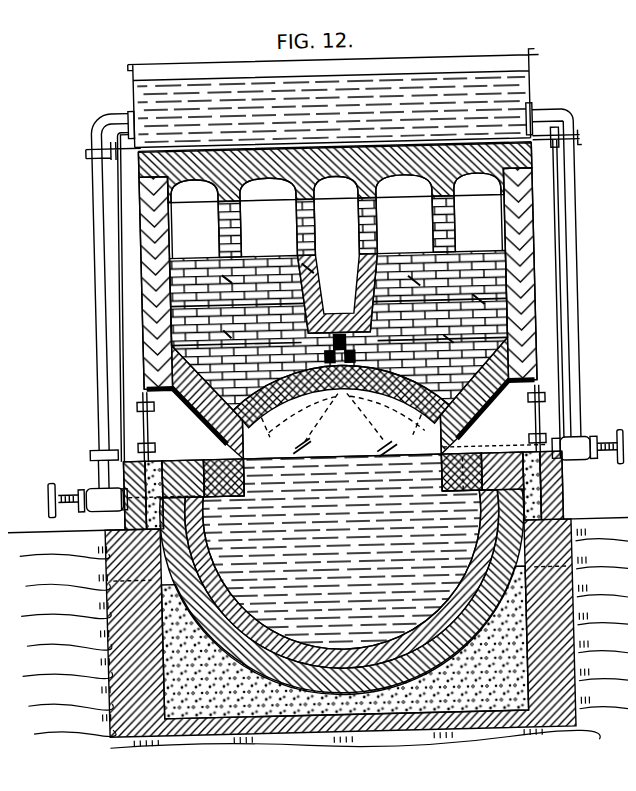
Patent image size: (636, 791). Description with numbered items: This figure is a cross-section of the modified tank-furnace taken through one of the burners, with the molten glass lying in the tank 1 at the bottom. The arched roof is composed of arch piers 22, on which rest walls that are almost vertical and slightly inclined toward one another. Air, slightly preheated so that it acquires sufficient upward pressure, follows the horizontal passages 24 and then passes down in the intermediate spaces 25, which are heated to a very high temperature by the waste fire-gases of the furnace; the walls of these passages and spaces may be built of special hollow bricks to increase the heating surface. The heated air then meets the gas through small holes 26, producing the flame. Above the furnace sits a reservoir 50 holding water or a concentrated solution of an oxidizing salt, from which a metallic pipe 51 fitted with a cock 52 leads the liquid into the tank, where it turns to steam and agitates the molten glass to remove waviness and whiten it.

The glass melting bath 1 is at (342, 552).
The arch piers 22 is at (341, 409).
The horizontal passages 24 is at (206, 239).
The intermediate spaces 25 is at (510, 266).
The small holes 26 is at (386, 424).
The reservoir 50 is at (96, 327).
The metallic pipe 51 is at (574, 363).
The cock 52 is at (336, 474).